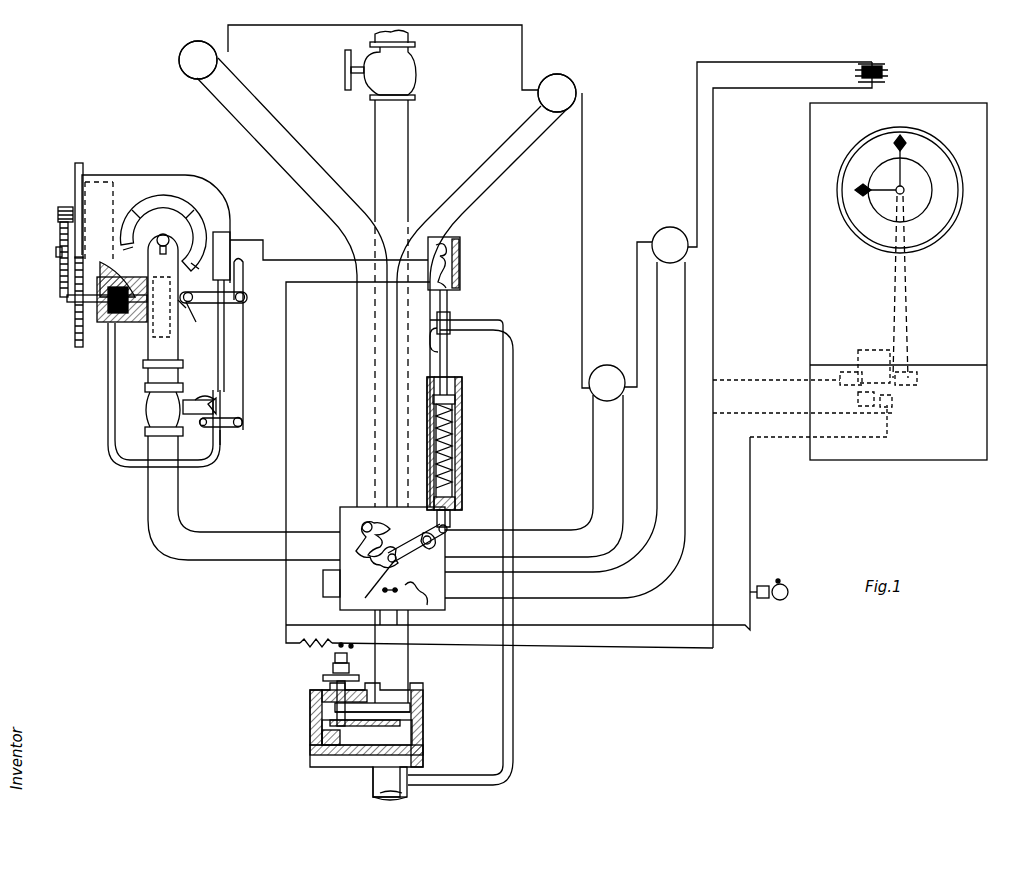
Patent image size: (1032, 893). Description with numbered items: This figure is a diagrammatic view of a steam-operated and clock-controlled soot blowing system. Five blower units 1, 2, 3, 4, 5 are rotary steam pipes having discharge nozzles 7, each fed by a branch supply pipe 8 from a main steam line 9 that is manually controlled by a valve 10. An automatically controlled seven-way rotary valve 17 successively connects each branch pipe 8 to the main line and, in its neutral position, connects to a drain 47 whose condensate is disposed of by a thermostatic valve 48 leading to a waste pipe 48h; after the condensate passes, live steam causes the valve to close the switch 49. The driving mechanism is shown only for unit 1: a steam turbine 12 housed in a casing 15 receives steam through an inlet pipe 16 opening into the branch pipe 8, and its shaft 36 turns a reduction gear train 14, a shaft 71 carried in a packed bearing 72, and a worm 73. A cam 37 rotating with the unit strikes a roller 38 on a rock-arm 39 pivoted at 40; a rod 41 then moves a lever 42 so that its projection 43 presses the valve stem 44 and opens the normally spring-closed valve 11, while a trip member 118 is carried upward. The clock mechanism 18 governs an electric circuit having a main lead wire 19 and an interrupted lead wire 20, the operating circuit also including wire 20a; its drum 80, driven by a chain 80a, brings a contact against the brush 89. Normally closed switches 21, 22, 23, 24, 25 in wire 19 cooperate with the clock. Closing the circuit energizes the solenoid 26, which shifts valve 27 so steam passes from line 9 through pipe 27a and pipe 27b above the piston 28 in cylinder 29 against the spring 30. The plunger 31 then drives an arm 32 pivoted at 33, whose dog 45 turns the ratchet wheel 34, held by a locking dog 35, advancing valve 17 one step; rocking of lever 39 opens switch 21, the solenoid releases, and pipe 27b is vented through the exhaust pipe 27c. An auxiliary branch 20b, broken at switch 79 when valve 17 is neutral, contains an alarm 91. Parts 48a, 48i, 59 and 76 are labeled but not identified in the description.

The blower unit 1 is at (158, 244).
The blower unit 2 is at (205, 62).
The blower unit 3 is at (577, 90).
The blower unit 4 is at (612, 370).
The blower unit 5 is at (660, 230).
The discharge nozzles 7 is at (165, 254).
The supply pipe 8 is at (320, 178).
The main steam line 9 is at (410, 137).
The valve 10 is at (416, 72).
The valve 11 is at (140, 410).
The steam turbine 12 is at (88, 185).
The reduction gear train 14 is at (58, 296).
The casing 15 is at (128, 175).
The inlet pipe 16 is at (108, 393).
The automatically controlled valve 17 is at (352, 520).
The clock mechanism 18 is at (980, 303).
The main lead wire 19 is at (812, 62).
The interrupted lead wire 20 is at (768, 92).
The main operating circuit wire 20a is at (628, 649).
The branch circuit 20b is at (620, 625).
The switch 21 is at (232, 242).
The switch 22 is at (217, 50).
The switch 23 is at (577, 92).
The switch 24 is at (628, 395).
The switch 25 is at (688, 252).
The solenoid member 26 is at (461, 258).
The valve 27 is at (450, 316).
The pipe 27a is at (450, 345).
The pipe 27b is at (447, 362).
The exhaust pipe 27c is at (513, 402).
The piston 28 is at (455, 400).
The cylinder 29 is at (462, 460).
The spring 30 is at (455, 486).
The plunger 31 is at (452, 425).
The arm 32 is at (448, 540).
The pivot 33 is at (355, 600).
The ratchet wheel 34 is at (425, 568).
The locking dog 35 is at (367, 520).
The shaft 36 is at (62, 200).
The cam 37 is at (192, 215).
The roller 38 is at (152, 280).
The rock-arm 39 is at (244, 304).
The pivot 40 is at (201, 319).
The rod 41 is at (243, 355).
The lever 42 is at (232, 428).
The projection 43 is at (217, 406).
The valve stem 44 is at (215, 397).
The dog 45 is at (430, 540).
The drain 47 is at (410, 662).
The thermostatic valve 48 is at (370, 712).
The plate 48a is at (333, 706).
The waste pipe 48h is at (372, 784).
The seat 48i is at (322, 728).
The switch 49 is at (333, 658).
The cylinder head 59 is at (458, 386).
The shaft 71 is at (83, 335).
The packed bearing 72 is at (120, 322).
The worm 73 is at (196, 327).
The tube 76 is at (215, 462).
The switch 79 is at (392, 594).
The drum 80 is at (868, 350).
The chain 80a is at (905, 282).
The brush 89 is at (905, 178).
The alarm 91 is at (788, 592).
The trip member 118 is at (243, 272).